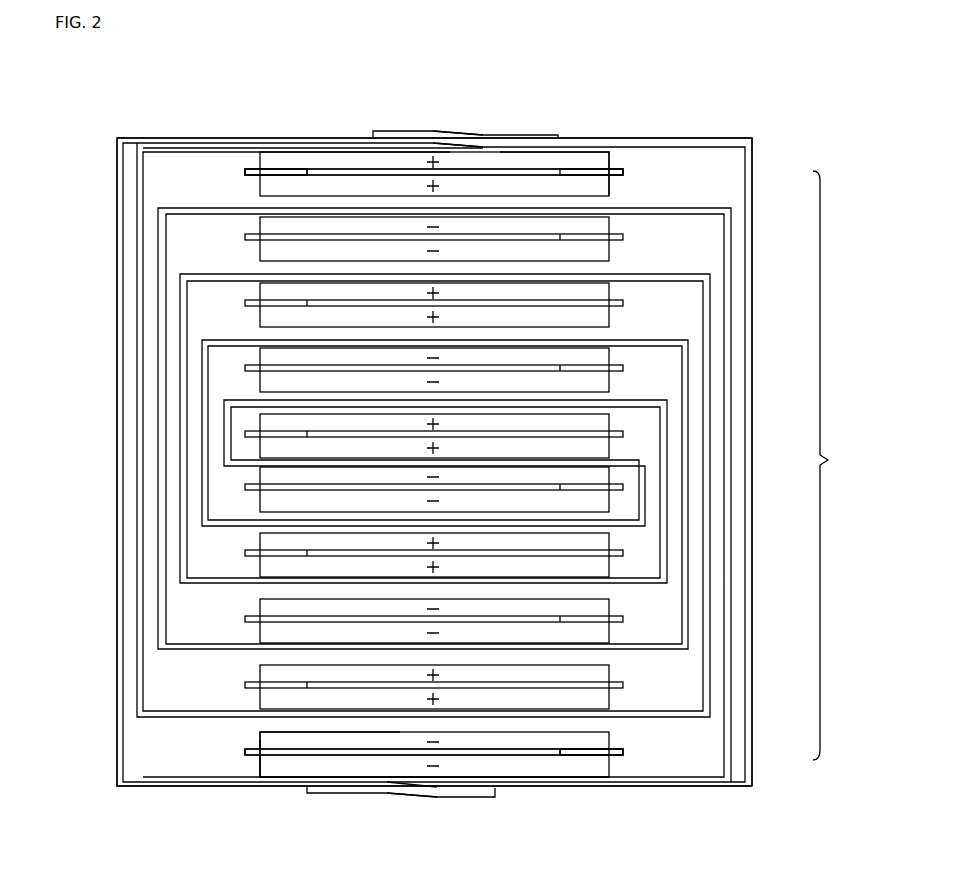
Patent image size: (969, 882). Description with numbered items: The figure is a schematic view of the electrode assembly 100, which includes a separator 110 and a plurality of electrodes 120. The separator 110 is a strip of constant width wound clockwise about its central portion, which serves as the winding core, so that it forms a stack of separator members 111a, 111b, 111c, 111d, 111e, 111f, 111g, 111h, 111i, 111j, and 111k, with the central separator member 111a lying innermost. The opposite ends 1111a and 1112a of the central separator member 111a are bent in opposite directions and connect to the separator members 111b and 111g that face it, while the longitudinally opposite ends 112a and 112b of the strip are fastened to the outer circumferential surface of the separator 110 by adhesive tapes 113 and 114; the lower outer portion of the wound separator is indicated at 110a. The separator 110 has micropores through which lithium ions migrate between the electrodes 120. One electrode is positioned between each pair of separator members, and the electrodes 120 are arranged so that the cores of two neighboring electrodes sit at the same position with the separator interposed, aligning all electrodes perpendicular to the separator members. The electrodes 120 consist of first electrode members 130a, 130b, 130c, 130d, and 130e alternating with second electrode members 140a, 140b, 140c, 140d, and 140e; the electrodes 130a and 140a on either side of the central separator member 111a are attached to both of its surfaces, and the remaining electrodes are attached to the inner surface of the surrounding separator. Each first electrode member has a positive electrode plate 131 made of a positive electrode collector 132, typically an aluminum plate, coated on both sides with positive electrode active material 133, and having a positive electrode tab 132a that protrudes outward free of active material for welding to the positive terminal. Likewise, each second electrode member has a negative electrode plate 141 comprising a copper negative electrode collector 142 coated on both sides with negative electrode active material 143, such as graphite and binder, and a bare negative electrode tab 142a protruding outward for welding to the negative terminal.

The electrode assembly 100 is at (78, 91).
The separator 110 is at (683, 141).
The bottom of case 110a is at (177, 779).
The central separator member 111a is at (241, 470).
The separator member 111b is at (213, 522).
The separator member 111c is at (215, 343).
The separator member 111d is at (166, 645).
The separator member 111e is at (172, 210).
The separator member 111f is at (143, 788).
The separator member 111g is at (237, 404).
The separator member 111h is at (188, 580).
The separator member 111i is at (194, 277).
The separator member 111j is at (160, 714).
The separator member 111k is at (160, 147).
The end of central separator member 1111a is at (224, 464).
The end of central separator member 1112a is at (650, 466).
The longitudinal end of separator 112a is at (432, 796).
The longitudinal end of separator 112b is at (436, 130).
The adhesive tape 113 is at (483, 134).
The adhesive tape 114 is at (387, 795).
The electrodes 120 is at (842, 465).
The first electrode member 130a is at (627, 434).
The first electrode member 130b is at (627, 553).
The first electrode member 130c is at (627, 303).
The first electrode member 130d is at (627, 685).
The first electrode member 130e is at (627, 172).
The positive electrode plate 131 is at (247, 170).
The positive electrode collector 132 is at (581, 167).
The positive electrode tab 132a is at (283, 168).
The positive electrode active material 133 is at (558, 151).
The second electrode member 140a is at (627, 487).
The second electrode member 140b is at (627, 368).
The second electrode member 140c is at (627, 619).
The second electrode member 140d is at (627, 237).
The second electrode member 140e is at (627, 752).
The negative electrode plate 141 is at (258, 737).
The negative electrode collector 142 is at (524, 757).
The negative electrode tab 142a is at (602, 766).
The negative electrode active material 143 is at (286, 748).